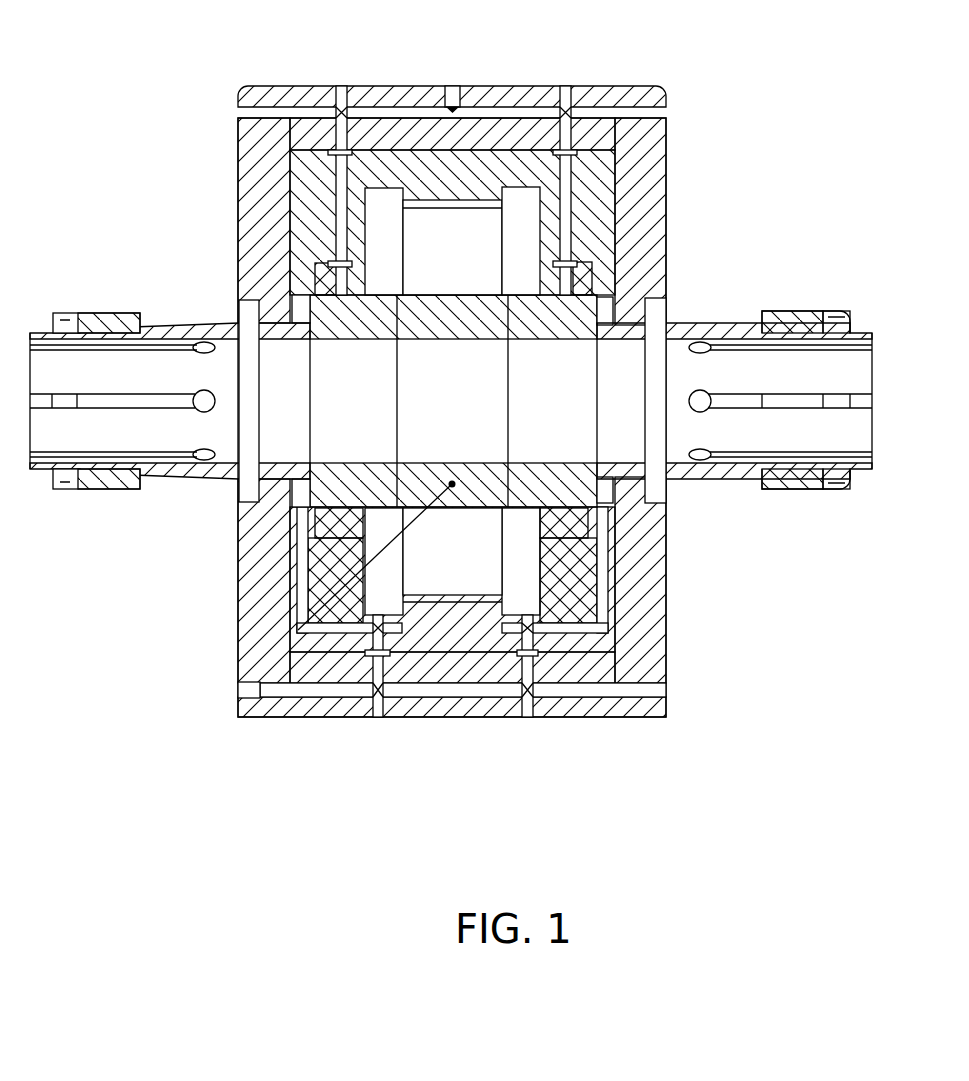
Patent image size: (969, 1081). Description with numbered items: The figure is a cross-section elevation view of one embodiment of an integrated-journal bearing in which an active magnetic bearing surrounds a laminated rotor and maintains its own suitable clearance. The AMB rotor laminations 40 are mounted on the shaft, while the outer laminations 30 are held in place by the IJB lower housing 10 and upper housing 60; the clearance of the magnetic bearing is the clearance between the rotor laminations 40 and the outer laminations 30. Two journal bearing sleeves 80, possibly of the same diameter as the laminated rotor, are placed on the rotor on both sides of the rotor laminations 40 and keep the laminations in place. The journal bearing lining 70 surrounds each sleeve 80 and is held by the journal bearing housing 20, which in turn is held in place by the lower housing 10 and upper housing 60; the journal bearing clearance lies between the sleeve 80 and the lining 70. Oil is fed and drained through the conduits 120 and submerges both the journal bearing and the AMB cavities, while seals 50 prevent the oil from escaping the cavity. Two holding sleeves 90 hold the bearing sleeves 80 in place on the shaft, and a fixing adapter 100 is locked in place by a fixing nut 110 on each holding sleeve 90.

The IJB lower housing 10 is at (640, 645).
The journal bearing housing 20 is at (312, 202).
The outer laminations 30 is at (443, 627).
The rotor laminations 40 is at (268, 652).
The seals 50 is at (249, 320).
The upper housing 60 is at (511, 98).
The journal bearing lining 70 is at (580, 280).
The journal bearing sleeves 80 is at (543, 487).
The holding sleeves 90 is at (142, 372).
The fixing adapter 100 is at (793, 318).
The fixing nut 110 is at (835, 323).
The conduits 120 is at (447, 688).